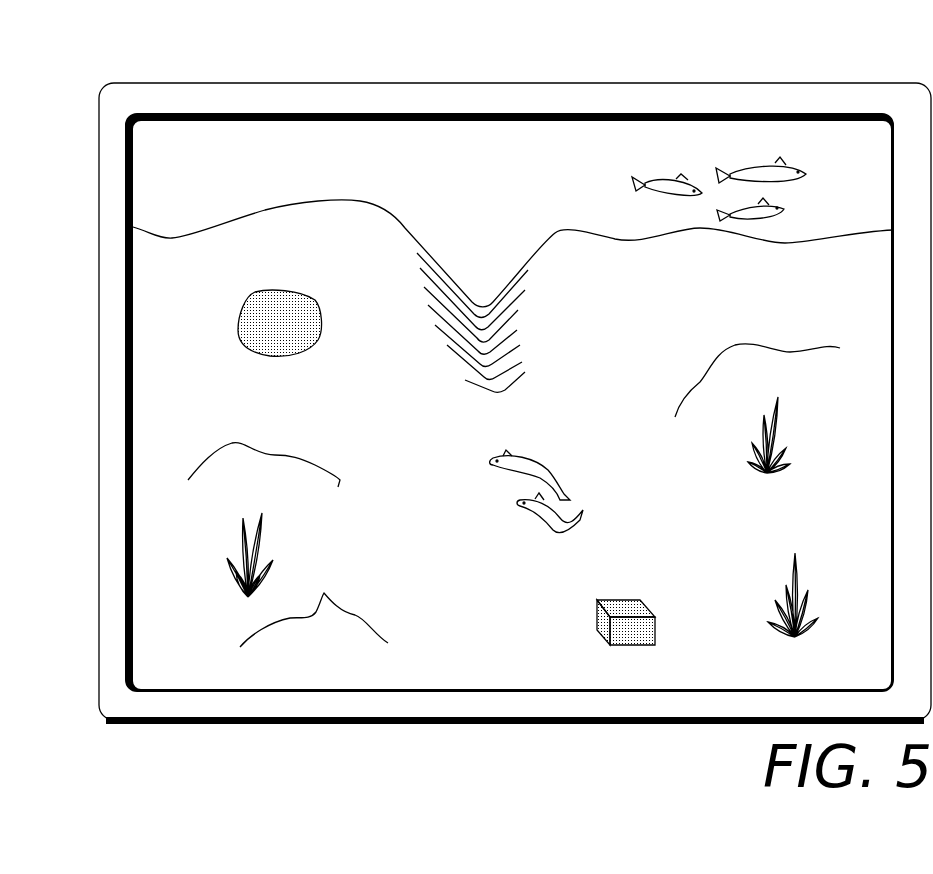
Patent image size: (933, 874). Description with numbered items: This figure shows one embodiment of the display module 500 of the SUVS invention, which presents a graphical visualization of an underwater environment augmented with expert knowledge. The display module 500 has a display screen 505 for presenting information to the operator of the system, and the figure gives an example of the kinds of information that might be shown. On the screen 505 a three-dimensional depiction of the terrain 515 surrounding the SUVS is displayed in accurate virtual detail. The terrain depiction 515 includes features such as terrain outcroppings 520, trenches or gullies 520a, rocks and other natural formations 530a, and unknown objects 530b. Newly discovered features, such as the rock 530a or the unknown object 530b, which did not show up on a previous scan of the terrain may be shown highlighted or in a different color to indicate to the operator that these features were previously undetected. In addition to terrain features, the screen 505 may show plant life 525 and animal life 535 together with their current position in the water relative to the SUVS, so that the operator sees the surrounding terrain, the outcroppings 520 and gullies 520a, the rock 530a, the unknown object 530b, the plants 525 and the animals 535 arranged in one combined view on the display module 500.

The display module 500 is at (110, 68).
The display screen 505 is at (125, 171).
The terrain 515 is at (313, 222).
The terrain outcroppings 520 is at (292, 463).
The trenches or gullies 520a is at (482, 308).
The plant life 525 is at (262, 541).
The rock 530a is at (320, 326).
The unknown object 530b is at (645, 600).
The animal life 535 is at (745, 167).